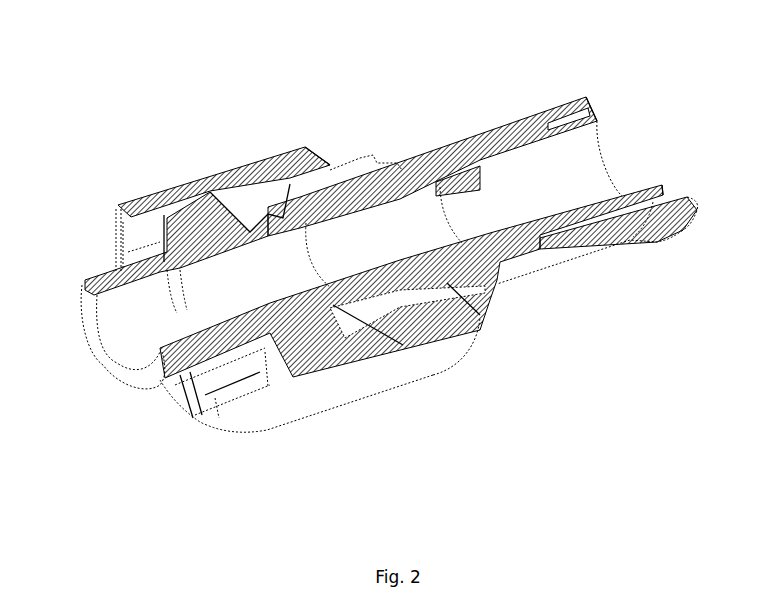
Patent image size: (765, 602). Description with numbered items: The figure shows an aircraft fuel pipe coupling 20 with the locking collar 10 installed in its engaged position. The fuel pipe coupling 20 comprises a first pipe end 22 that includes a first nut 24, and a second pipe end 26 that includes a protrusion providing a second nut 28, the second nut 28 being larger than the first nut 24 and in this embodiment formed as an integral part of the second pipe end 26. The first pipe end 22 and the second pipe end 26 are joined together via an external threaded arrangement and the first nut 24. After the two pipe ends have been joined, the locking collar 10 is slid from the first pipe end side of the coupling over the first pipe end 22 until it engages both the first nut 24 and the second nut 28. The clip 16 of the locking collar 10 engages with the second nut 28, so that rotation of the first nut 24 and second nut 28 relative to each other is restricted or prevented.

The locking collar 10 is at (207, 149).
The clip 16 is at (197, 392).
The fuel pipe coupling 20 is at (357, 90).
The first pipe end 22 is at (424, 135).
The first nut 24 is at (463, 287).
The second pipe end 26 is at (82, 262).
The second nut 28 is at (200, 222).